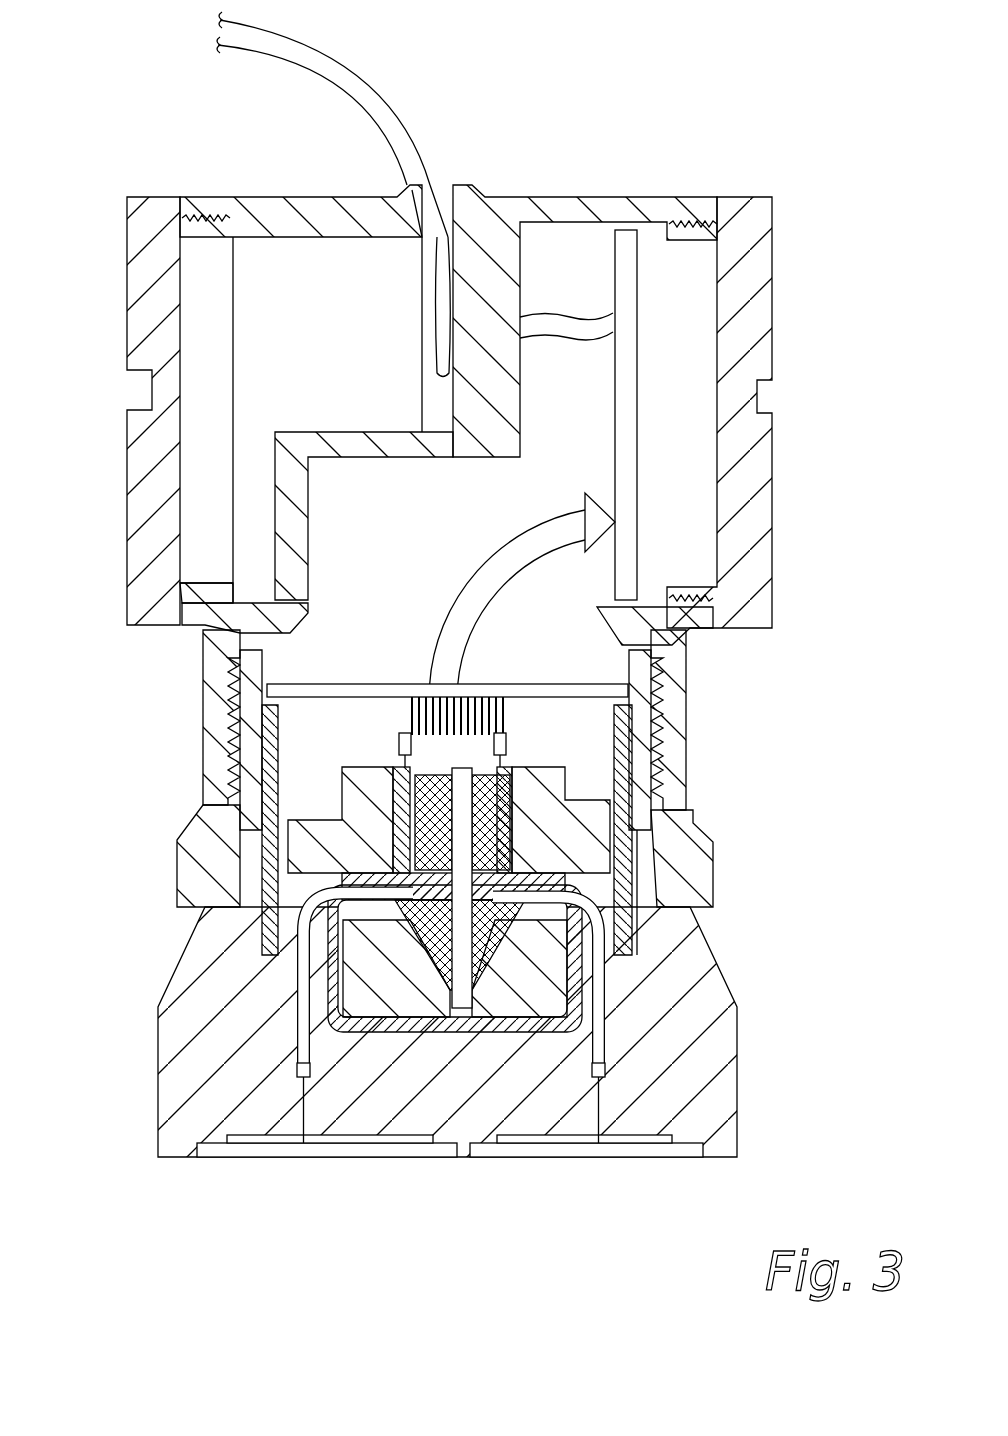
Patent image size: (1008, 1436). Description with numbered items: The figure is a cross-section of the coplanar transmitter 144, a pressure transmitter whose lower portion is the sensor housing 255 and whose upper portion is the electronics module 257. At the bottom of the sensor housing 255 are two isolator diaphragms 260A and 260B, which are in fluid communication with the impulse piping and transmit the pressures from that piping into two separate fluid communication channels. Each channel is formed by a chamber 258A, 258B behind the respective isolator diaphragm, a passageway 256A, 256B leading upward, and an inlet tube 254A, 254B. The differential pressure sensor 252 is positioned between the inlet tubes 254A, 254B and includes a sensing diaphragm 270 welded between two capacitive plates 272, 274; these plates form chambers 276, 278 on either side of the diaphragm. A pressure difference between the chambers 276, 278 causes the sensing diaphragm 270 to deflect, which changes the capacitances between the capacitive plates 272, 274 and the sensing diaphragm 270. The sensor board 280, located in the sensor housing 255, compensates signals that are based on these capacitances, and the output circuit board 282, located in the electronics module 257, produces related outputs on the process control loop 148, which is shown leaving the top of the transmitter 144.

The coplanar transmitter 144 is at (628, 100).
The process control loop 148 is at (346, 40).
The output circuit board 282 is at (640, 318).
The sensor board 280 is at (540, 690).
The electronics module 257 is at (690, 682).
The differential pressure sensor 252 is at (260, 757).
The chamber 276 is at (366, 792).
The sensing diaphragm 270 is at (555, 782).
The inlet tube 254A is at (248, 828).
The inlet tube 254B is at (714, 890).
The capacitive plate 274 is at (480, 860).
The chamber 278 is at (560, 878).
The capacitive plate 272 is at (352, 935).
The sensor housing 255 is at (737, 980).
The passageway 256A is at (296, 1068).
The passageway 256B is at (606, 1070).
The chamber 258A is at (245, 1140).
The chamber 258B is at (700, 1140).
The isolator diaphragm 260A is at (258, 1148).
The isolator diaphragm 260B is at (547, 1148).